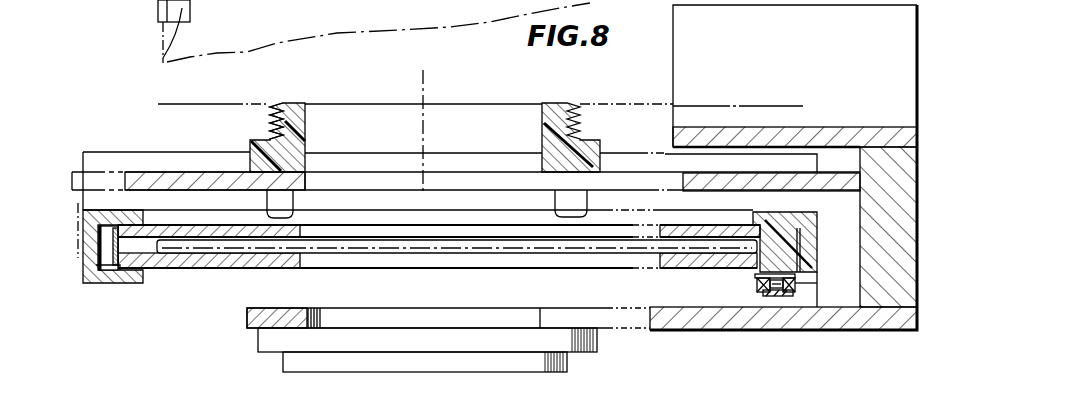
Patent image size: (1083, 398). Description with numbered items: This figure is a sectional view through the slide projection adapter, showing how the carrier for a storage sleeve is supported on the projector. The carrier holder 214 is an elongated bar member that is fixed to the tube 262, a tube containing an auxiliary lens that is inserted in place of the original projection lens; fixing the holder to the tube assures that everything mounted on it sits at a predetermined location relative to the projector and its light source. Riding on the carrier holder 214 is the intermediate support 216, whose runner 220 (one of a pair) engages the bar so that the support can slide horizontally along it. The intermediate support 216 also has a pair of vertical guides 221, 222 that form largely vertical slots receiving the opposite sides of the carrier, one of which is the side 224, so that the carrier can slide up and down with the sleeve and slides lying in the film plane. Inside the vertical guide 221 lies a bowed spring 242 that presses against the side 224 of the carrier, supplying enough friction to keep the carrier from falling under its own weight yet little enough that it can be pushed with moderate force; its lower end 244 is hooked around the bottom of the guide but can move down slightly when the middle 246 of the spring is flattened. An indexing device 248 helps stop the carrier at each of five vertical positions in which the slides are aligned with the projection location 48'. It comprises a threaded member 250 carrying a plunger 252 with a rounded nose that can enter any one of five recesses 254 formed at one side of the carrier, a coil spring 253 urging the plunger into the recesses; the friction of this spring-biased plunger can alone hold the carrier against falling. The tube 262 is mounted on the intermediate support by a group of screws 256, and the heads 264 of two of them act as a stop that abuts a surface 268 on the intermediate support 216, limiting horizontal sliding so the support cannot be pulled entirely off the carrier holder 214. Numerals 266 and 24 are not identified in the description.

The runner 220 is at (112, 5).
The intermediate support 216 is at (173, 128).
The carrier holder 214 is at (207, 177).
The tube 262 is at (306, 108).
The threads 266 is at (269, 106).
The head 264 is at (557, 197).
The side of the carrier 224 is at (142, 282).
The projection location 48' is at (457, 274).
The spring 242 is at (80, 226).
The lower end 244 is at (83, 268).
The middle 246 is at (119, 250).
The vertical guide 221 is at (88, 285).
The surface 268 is at (752, 214).
The recess 254 is at (782, 266).
The coil spring 253 is at (808, 284).
The plunger 252 is at (756, 280).
The screws 256 is at (757, 290).
The threaded member 250 is at (785, 299).
The indexing device 248 is at (768, 305).
The vertical guide 222 is at (819, 297).
The base plates 24 is at (448, 353).